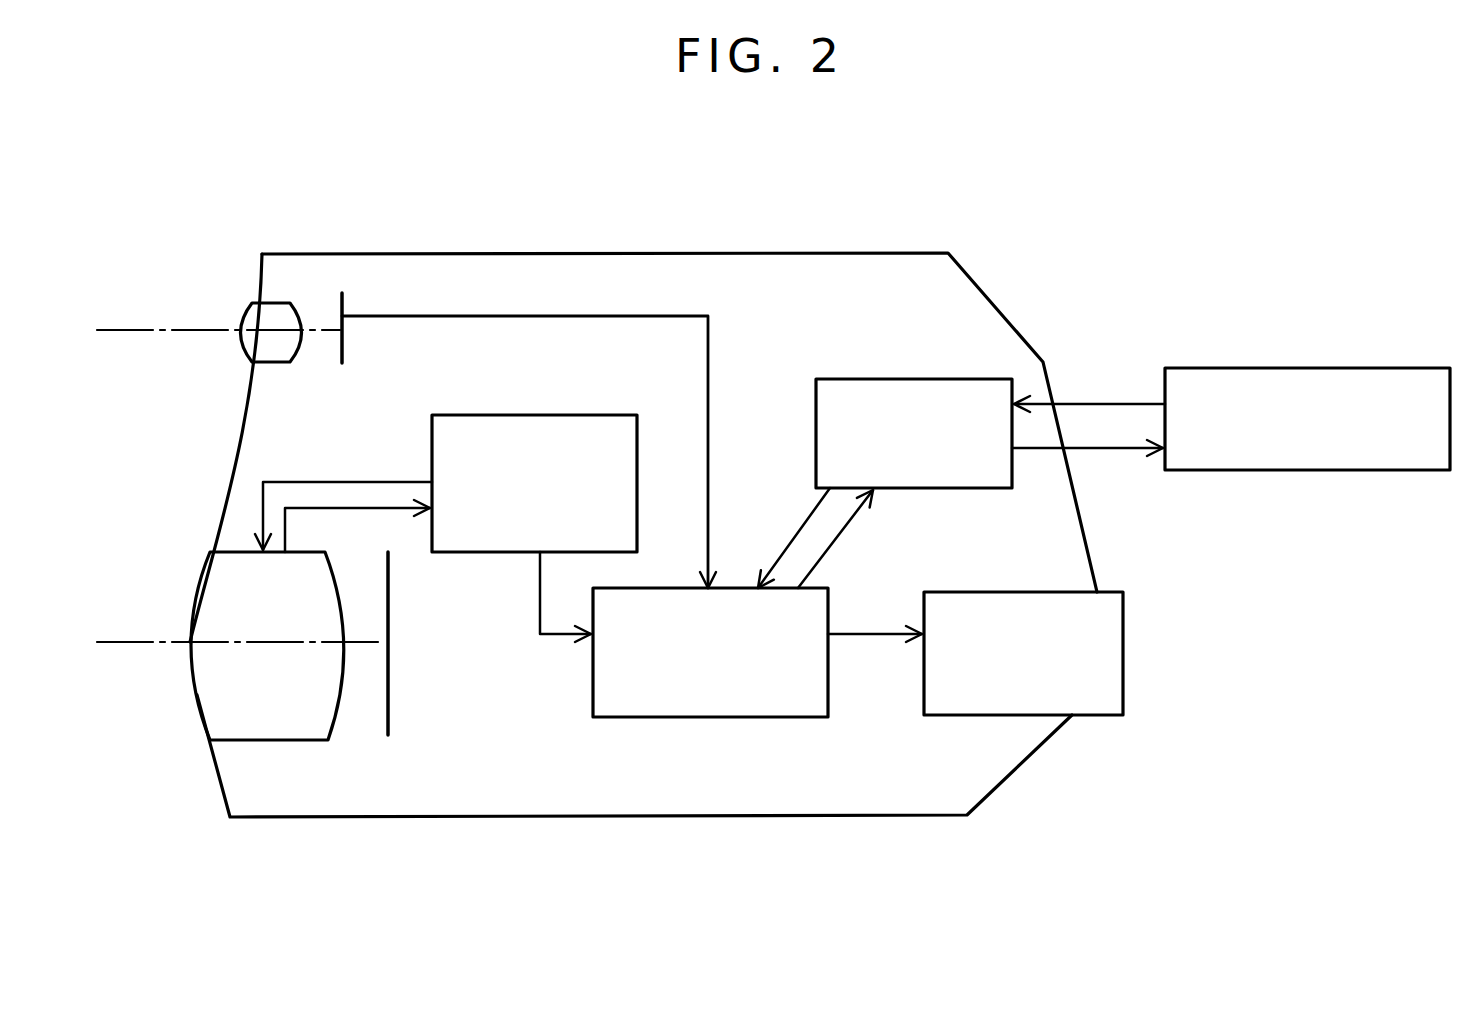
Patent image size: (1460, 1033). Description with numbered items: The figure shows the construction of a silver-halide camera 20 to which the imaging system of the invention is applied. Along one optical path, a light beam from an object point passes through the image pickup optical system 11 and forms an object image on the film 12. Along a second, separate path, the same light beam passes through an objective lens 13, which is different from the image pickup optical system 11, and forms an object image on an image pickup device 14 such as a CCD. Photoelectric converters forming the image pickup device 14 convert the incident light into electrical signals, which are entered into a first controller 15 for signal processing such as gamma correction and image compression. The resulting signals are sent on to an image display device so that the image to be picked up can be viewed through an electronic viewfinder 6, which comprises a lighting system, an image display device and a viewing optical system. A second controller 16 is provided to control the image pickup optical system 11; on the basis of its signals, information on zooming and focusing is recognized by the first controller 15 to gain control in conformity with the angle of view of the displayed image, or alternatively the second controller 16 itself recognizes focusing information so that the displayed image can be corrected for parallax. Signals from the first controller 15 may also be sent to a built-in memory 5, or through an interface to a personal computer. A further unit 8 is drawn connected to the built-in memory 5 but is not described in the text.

The silver-halide camera 20 is at (1018, 767).
The objective lens 13 is at (272, 303).
The image pickup device 14 is at (343, 303).
The image pickup optical system 11 is at (197, 695).
The film 12 is at (388, 705).
The second controller 16 is at (545, 430).
The built-in memory 5 is at (917, 395).
The external device 8 is at (1304, 385).
The first controller 15 is at (723, 720).
The electronic viewfinder 6 is at (1110, 655).